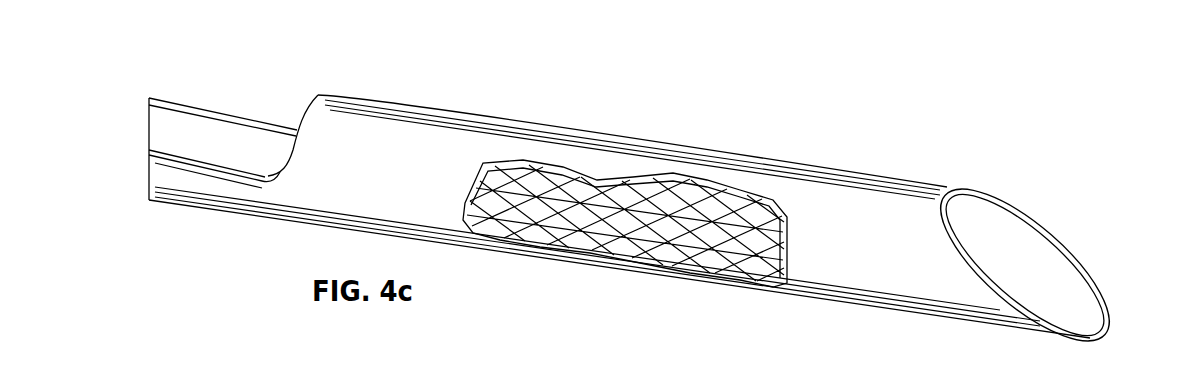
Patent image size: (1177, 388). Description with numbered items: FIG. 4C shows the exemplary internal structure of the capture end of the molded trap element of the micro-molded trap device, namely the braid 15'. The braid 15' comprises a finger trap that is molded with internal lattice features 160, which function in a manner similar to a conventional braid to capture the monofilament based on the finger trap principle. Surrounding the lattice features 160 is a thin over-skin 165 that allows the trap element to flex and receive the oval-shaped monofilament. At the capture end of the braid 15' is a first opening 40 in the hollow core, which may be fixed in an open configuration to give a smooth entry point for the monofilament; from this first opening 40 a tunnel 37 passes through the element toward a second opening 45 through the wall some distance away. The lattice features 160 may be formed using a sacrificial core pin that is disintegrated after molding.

The braid 15' is at (619, 201).
The second opening 45 is at (278, 108).
The thin over-skin 165 is at (643, 148).
The internal lattice features 160 is at (600, 199).
The first opening 40 is at (1027, 220).
The tunnel 37 is at (1027, 248).